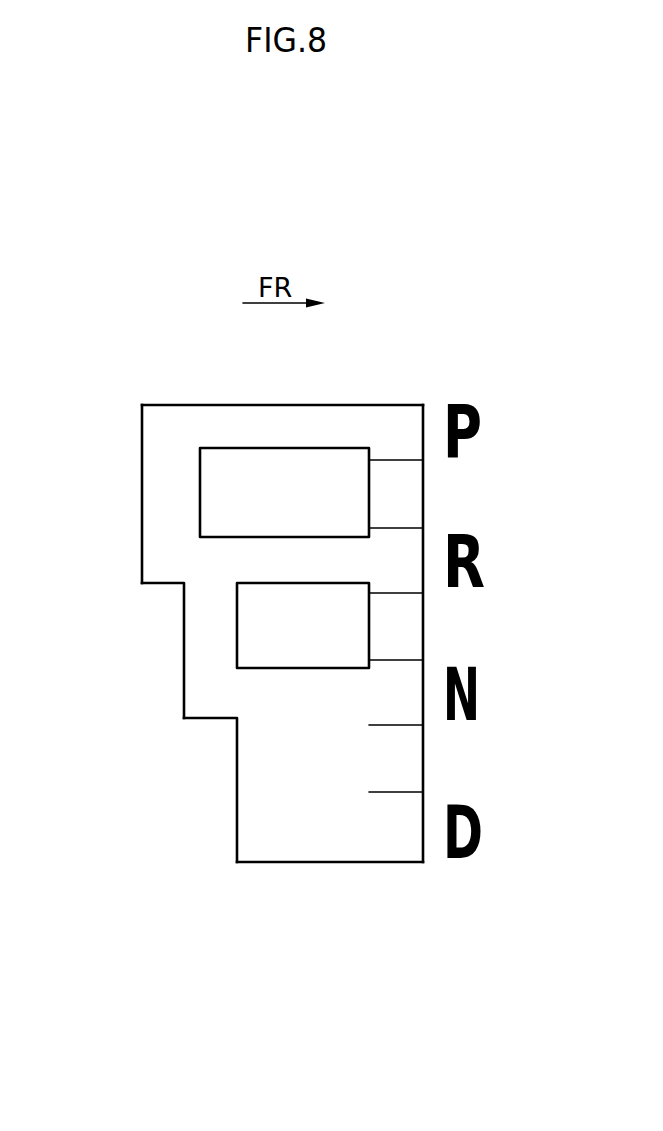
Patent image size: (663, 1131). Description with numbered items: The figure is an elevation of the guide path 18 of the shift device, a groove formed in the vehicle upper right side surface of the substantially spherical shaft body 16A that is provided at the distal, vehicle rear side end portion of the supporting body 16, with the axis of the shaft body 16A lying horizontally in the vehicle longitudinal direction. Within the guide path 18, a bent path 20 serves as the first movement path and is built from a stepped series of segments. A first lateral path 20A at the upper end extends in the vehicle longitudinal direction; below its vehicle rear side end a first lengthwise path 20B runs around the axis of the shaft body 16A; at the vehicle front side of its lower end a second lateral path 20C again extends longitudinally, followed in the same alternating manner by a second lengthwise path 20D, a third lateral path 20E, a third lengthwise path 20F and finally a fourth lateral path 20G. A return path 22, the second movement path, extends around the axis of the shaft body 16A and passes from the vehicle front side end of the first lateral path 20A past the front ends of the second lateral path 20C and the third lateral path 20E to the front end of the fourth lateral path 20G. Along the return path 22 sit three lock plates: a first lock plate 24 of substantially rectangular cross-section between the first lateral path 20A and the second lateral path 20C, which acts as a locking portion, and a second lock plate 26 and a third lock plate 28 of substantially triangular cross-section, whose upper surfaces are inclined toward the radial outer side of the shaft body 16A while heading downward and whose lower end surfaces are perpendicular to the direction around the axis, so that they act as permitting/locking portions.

The supporting body 16 is at (273, 591).
The shaft body 16A is at (114, 338).
The guide path 18 is at (222, 424).
The bent path 20 is at (155, 467).
The first lateral path 20A is at (313, 418).
The first lengthwise path 20B is at (155, 517).
The second lateral path 20C is at (297, 555).
The second lengthwise path 20D is at (200, 627).
The third lateral path 20E is at (325, 685).
The third lengthwise path 20F is at (255, 766).
The fourth lateral path 20G is at (325, 838).
The return path 22 is at (400, 418).
The first lock plate 24 is at (412, 494).
The second lock plate 26 is at (412, 628).
The third lock plate 28 is at (412, 762).